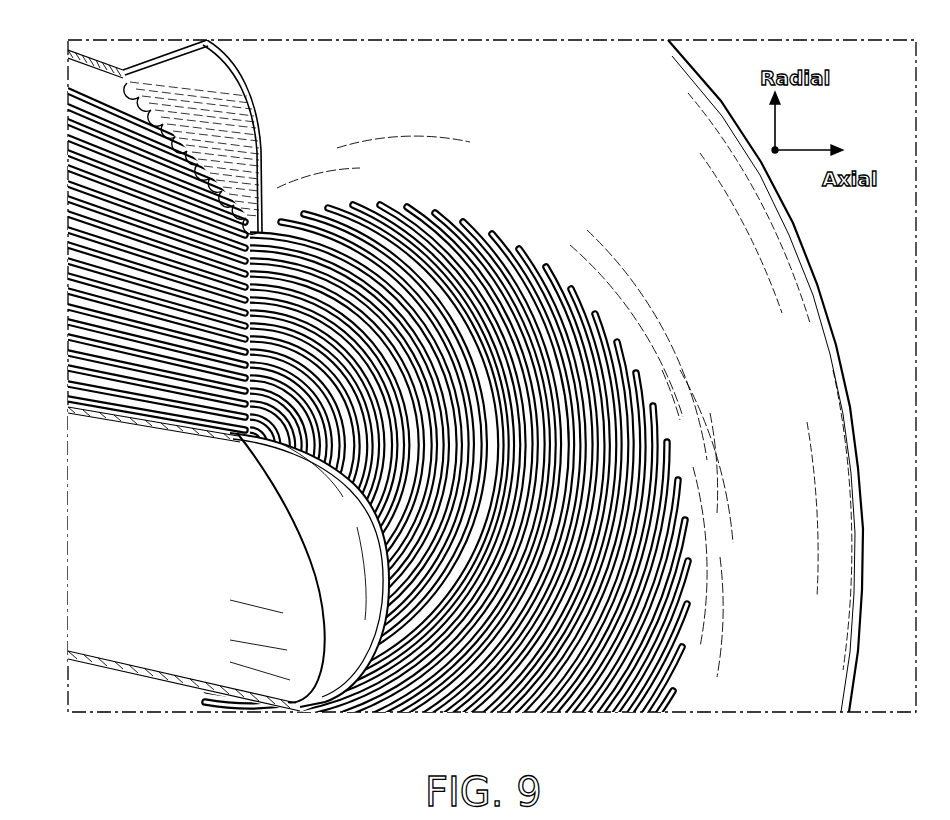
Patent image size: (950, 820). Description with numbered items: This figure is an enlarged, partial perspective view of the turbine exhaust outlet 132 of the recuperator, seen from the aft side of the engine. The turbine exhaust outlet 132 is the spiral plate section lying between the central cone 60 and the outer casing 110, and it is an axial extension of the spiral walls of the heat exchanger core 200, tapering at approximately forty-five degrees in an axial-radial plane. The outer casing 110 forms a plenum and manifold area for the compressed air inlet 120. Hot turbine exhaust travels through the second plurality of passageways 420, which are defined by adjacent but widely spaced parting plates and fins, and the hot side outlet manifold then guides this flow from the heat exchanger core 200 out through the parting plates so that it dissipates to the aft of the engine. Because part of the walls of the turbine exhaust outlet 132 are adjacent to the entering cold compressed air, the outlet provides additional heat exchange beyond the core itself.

The central cone 60 is at (356, 560).
The outer casing 110 is at (708, 225).
The compressed air inlet 120 is at (200, 110).
The turbine exhaust outlet 132 is at (576, 565).
The heat exchanger core 200 is at (136, 267).
The second plurality of passageways 420 is at (68, 335).